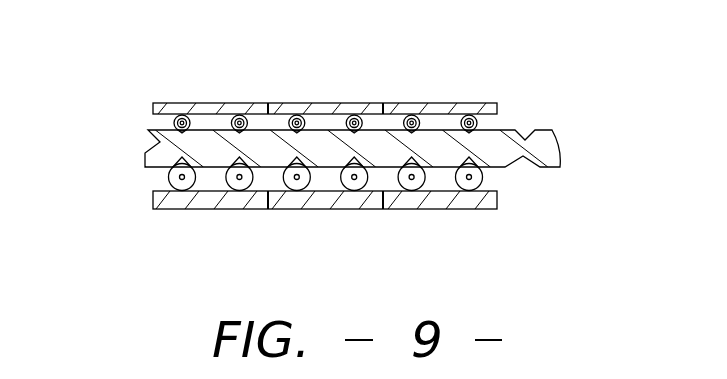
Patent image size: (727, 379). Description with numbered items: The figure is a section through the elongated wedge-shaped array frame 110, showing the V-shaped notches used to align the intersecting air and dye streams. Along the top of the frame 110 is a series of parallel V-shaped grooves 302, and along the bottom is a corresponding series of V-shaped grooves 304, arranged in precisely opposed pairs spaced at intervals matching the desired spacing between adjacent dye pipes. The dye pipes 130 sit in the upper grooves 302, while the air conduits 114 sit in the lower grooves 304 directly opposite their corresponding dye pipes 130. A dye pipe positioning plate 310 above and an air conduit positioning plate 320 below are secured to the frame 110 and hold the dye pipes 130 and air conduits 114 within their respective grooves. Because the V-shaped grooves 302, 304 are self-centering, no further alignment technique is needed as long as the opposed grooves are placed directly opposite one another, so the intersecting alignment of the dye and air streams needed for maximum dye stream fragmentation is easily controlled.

The array frame 110 is at (506, 128).
The air conduits 114 is at (485, 178).
The dye pipes 130 is at (402, 119).
The V-shaped grooves 302 is at (250, 132).
The V-shaped grooves 304 is at (172, 155).
The dye pipe positioning plate 310 is at (443, 103).
The air conduit positioning plate 320 is at (437, 212).